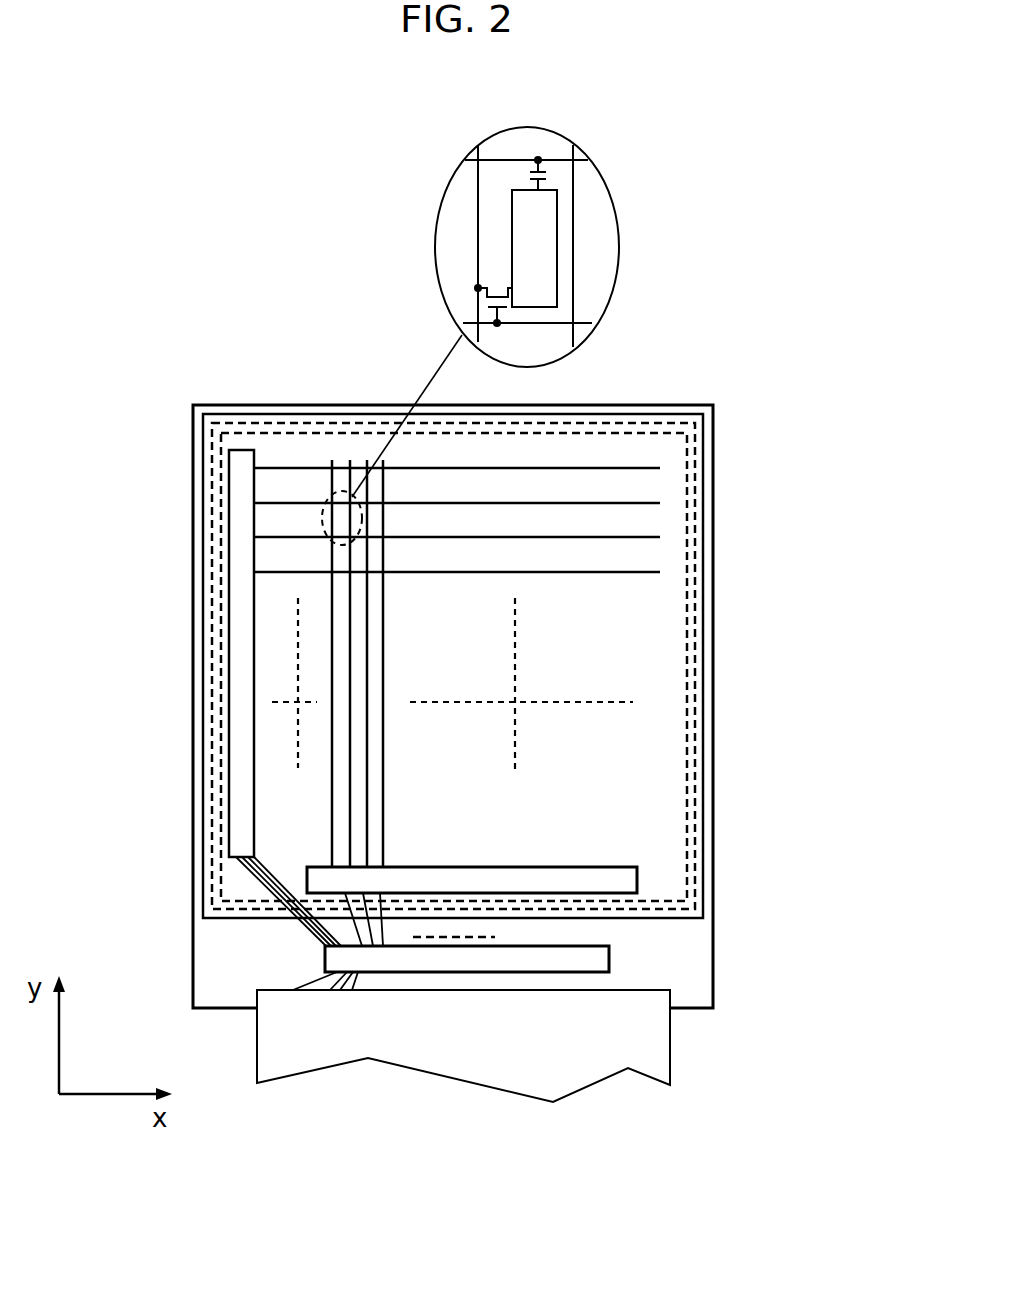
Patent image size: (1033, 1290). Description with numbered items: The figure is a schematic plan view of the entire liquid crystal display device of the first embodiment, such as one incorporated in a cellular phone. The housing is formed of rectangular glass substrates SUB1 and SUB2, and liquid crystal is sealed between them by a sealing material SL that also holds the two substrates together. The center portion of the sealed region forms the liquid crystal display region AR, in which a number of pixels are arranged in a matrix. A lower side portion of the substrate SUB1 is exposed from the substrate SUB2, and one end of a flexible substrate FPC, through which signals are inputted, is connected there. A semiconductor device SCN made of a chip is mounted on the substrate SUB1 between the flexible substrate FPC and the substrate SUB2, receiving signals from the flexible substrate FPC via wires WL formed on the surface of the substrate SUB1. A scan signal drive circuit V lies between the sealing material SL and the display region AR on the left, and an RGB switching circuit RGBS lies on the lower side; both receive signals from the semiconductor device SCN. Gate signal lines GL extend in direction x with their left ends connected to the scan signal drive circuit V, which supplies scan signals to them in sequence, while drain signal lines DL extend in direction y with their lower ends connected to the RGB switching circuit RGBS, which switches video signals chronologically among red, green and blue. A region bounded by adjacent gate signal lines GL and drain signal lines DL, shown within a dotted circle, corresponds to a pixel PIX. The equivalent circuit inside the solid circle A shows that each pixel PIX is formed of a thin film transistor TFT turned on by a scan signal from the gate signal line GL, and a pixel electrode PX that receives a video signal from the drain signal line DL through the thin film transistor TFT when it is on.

The substrate SUB1 is at (713, 470).
The substrate SUB2 is at (707, 820).
The sealing material SL is at (690, 668).
The scan signal drive circuit V is at (238, 683).
The liquid crystal display region AR is at (452, 692).
The gate signal line GL is at (280, 503).
The drain signal line DL is at (478, 160).
The pixel PIX is at (352, 546).
The solid circle A is at (527, 226).
The pixel electrode PX is at (512, 225).
The thin film transistor TFT is at (478, 291).
The RGB switching circuit RGBS is at (577, 882).
The semiconductor device SCN is at (572, 962).
The wires WL is at (360, 982).
The flexible substrate FPC is at (323, 1038).